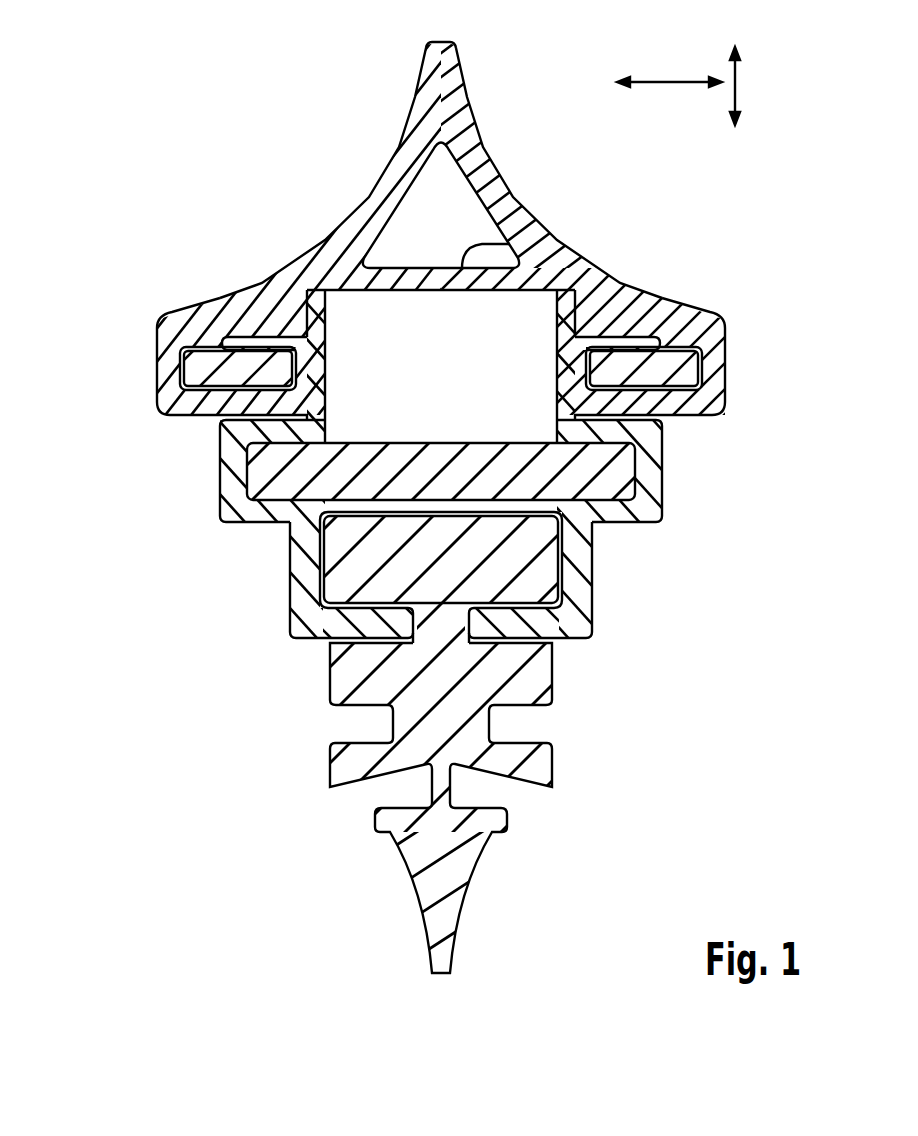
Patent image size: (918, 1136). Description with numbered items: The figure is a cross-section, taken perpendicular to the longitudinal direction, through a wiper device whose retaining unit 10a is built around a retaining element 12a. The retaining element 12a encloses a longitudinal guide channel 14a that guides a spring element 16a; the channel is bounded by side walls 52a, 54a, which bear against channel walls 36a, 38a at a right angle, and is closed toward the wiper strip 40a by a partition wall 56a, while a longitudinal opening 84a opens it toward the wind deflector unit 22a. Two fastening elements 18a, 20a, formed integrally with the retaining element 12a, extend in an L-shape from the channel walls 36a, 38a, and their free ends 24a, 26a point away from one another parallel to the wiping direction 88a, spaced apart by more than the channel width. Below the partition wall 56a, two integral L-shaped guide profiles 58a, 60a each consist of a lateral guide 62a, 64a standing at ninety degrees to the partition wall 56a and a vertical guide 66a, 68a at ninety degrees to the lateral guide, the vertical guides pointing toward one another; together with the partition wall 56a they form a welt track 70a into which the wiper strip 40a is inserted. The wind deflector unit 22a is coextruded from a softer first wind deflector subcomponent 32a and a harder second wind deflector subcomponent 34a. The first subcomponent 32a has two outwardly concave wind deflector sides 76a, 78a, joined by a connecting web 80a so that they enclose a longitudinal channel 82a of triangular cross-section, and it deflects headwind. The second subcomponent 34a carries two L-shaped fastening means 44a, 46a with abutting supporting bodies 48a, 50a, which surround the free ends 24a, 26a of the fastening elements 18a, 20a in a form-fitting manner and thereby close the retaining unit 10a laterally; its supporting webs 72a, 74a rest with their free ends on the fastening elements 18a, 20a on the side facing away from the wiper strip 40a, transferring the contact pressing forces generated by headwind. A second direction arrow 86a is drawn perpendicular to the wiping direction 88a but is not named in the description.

The retaining unit 10a is at (168, 565).
The retaining element 12a is at (238, 479).
The longitudinal guide channel 14a is at (630, 462).
The spring element 16a is at (368, 470).
The fastening element 18a is at (300, 345).
The fastening element 20a is at (600, 342).
The wind deflector unit 22a is at (282, 242).
The free end 24a is at (183, 365).
The free end 26a is at (705, 362).
The first wind deflector subcomponent 32a is at (428, 64).
The second wind deflector subcomponent 34a is at (240, 295).
The channel wall 36a is at (215, 427).
The channel wall 38a is at (658, 431).
The wiper strip 40a is at (345, 755).
The L-shaped fastening means 44a is at (178, 393).
The L-shaped fastening means 46a is at (698, 394).
The supporting body 48a is at (195, 318).
The supporting body 50a is at (695, 325).
The side wall 52a is at (235, 514).
The side wall 54a is at (655, 479).
The partition wall 56a is at (493, 507).
The L-shaped guide profile 58a is at (313, 630).
The L-shaped guide profile 60a is at (572, 626).
The lateral guide 62a is at (310, 592).
The lateral guide 64a is at (595, 596).
The vertical guide 66a is at (380, 632).
The vertical guide 68a is at (530, 617).
The welt track 70a is at (632, 553).
The supporting web 72a is at (262, 355).
The supporting web 74a is at (600, 310).
The wind deflector side 76a is at (382, 154).
The wind deflector side 78a is at (498, 158).
The connecting web 80a is at (445, 277).
The longitudinal channel 82a is at (464, 232).
The longitudinal opening 84a is at (464, 413).
The vertical direction 86a is at (736, 88).
The wiping direction 88a is at (672, 82).